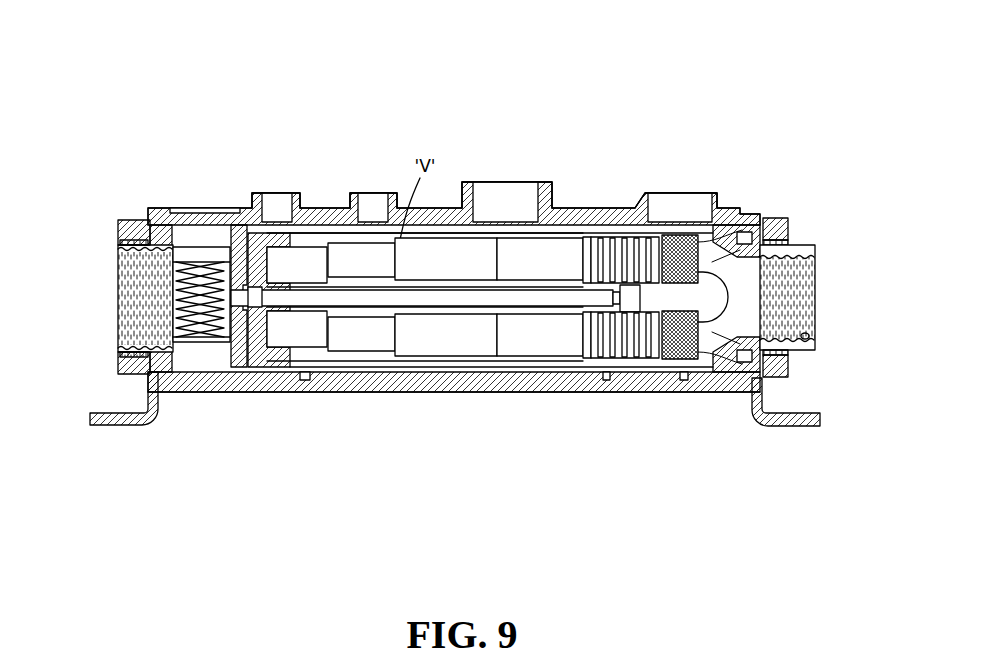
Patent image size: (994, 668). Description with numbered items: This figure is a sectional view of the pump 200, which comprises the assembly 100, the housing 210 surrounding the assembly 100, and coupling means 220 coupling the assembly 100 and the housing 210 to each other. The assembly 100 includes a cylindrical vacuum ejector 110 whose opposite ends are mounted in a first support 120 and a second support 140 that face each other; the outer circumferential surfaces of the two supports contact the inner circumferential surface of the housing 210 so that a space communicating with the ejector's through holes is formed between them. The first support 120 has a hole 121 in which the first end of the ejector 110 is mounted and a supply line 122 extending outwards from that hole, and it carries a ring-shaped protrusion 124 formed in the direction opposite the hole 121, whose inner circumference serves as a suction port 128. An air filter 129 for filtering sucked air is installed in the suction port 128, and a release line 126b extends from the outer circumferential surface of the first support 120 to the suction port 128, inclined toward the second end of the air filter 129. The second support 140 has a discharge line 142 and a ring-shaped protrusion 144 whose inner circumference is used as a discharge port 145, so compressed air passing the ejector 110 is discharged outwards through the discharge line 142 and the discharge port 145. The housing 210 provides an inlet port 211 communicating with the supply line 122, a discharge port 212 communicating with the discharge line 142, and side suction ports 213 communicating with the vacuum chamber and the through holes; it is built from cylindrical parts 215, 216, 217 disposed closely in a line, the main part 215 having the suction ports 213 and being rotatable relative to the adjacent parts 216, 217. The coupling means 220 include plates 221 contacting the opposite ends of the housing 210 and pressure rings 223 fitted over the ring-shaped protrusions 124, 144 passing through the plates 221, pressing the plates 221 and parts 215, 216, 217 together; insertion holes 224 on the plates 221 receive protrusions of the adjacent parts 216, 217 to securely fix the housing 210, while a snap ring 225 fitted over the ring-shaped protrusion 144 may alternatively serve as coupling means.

The pump 200 is at (597, 26).
The housing 210 is at (395, 400).
The inlet port 211 is at (270, 200).
The discharge port 212 is at (653, 210).
The side suction ports 213 is at (372, 205).
The main part 215 is at (560, 395).
The adjacent part 216 is at (290, 395).
The adjacent part 217 is at (683, 395).
The coupling means 220 is at (150, 432).
The plates 221 is at (790, 430).
The pressure rings 223 is at (790, 225).
The insertion holes 224 is at (152, 212).
The snap ring 225 is at (790, 365).
The assembly 100 is at (455, 372).
The vacuum ejector 110 is at (510, 372).
The first support 120 is at (198, 378).
The hole 121 is at (330, 232).
The supply line 122 is at (272, 270).
The ring-shaped protrusion 124 is at (118, 252).
The release line 126b is at (237, 232).
The suction port 128 is at (122, 338).
The air filter 129 is at (170, 300).
The second support 140 is at (628, 374).
The discharge line 142 is at (731, 308).
The ring-shaped protrusion 144 is at (805, 248).
The discharge port 145 is at (805, 335).